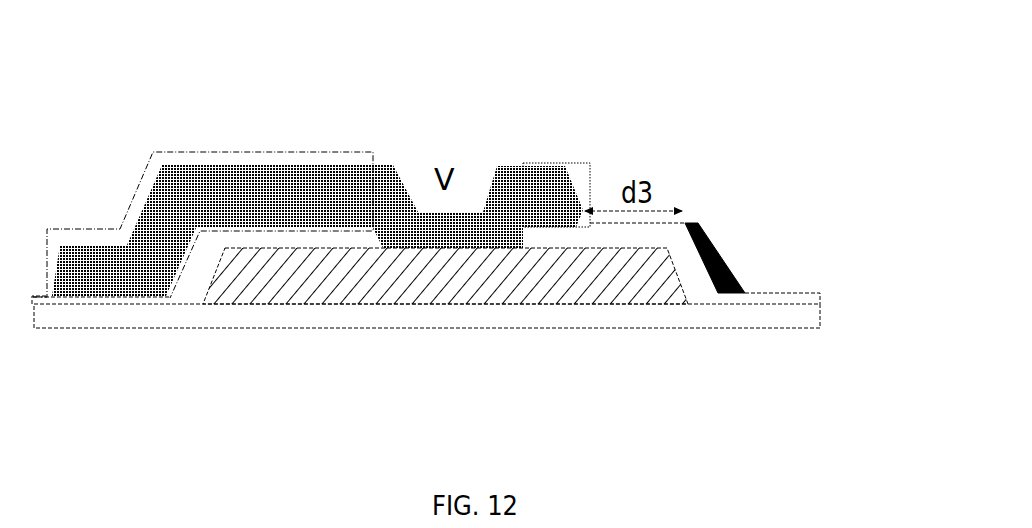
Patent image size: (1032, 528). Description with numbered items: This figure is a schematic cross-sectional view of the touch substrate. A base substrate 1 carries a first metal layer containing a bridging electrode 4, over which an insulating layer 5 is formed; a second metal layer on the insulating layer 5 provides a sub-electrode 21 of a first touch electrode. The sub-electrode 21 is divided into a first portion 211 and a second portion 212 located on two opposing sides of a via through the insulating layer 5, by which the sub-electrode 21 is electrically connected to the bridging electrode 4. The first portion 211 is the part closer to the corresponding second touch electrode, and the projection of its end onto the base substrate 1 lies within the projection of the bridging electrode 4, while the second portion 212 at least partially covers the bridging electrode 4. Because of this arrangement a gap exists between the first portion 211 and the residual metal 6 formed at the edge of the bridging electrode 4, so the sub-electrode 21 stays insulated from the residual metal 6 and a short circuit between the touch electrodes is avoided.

The base substrate 1 is at (740, 317).
The bridging electrode 4 is at (435, 270).
The insulating layer 5 is at (683, 261).
The residual metal 6 is at (708, 240).
The sub-electrode 21 is at (512, 165).
The first portion 211 is at (573, 163).
The second portion 212 is at (243, 152).